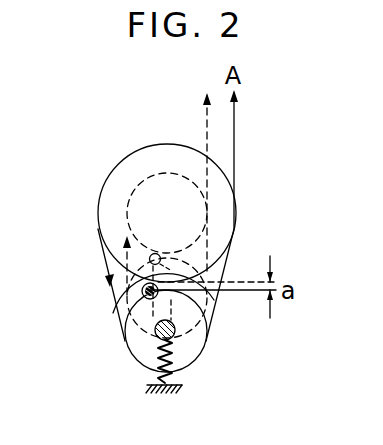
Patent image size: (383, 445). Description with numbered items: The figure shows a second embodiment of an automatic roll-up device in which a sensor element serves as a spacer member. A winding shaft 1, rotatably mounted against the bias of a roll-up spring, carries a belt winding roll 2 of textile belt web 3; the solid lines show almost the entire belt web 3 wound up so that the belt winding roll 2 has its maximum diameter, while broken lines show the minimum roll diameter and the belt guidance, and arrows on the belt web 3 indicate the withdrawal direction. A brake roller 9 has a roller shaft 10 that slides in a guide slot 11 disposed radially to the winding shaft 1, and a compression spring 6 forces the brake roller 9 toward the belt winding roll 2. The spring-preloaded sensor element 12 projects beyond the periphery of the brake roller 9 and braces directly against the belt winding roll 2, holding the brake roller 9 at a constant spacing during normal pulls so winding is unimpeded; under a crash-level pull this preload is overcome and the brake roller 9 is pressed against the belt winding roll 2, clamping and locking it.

The winding shaft 1 is at (171, 173).
The belt winding roll 2 is at (113, 168).
The belt web 3 is at (207, 138).
The compression spring 6 is at (176, 384).
The brake roller 9 is at (143, 357).
The roller shaft 10 is at (153, 336).
The guide slot 11 is at (212, 326).
The sensor element 12 is at (141, 293).